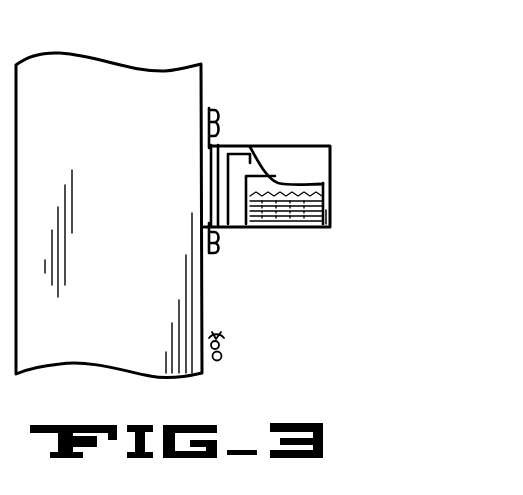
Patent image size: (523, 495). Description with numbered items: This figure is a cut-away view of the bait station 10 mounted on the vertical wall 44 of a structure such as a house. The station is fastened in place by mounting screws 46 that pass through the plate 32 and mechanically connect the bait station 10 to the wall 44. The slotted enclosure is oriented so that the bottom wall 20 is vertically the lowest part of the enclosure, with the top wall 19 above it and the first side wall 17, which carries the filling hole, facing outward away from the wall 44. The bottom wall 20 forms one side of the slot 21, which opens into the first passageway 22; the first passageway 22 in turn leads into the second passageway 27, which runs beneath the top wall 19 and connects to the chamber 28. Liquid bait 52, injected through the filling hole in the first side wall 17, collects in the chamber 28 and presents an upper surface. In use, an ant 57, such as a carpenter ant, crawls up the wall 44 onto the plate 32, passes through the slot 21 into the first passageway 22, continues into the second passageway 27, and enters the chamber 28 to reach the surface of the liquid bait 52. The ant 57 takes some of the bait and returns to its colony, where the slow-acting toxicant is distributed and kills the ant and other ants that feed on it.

The bait station 10 is at (331, 121).
The first side wall 17 is at (330, 205).
The top wall 19 is at (233, 140).
The bottom wall 20 is at (315, 229).
The slot 21 is at (235, 197).
The first passageway 22 is at (243, 228).
The second passageway 27 is at (249, 146).
The chamber 28 is at (331, 185).
The plate 32 is at (205, 117).
The wall 44 is at (125, 132).
The mounting screws 46 is at (221, 252).
The liquid bait 52 is at (331, 216).
The ant 57 is at (221, 352).